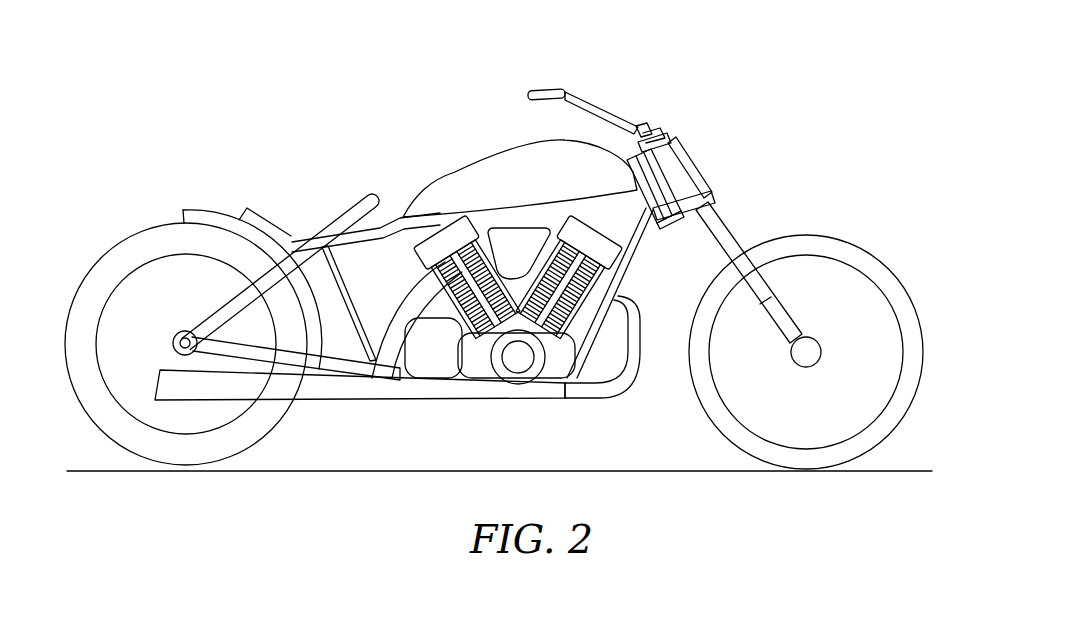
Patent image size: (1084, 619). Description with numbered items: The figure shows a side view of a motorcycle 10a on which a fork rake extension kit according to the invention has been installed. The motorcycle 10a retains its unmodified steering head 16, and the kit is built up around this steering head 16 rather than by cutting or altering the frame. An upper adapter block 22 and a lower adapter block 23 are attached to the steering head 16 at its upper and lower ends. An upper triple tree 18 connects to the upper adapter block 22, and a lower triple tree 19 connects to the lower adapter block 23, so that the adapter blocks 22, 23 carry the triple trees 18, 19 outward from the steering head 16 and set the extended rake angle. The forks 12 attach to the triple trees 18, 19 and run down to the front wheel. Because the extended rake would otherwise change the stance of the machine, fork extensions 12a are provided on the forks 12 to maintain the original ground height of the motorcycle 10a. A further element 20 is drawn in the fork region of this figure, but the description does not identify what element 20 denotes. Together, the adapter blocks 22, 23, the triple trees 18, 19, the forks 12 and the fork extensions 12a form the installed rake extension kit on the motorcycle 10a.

The motorcycle 10a is at (498, 255).
The upper adapter block 22 is at (623, 147).
The upper triple tree 18 is at (653, 147).
The steering head 16 is at (667, 170).
The fork stanchion 20 is at (677, 185).
The lower triple tree 19 is at (713, 203).
The lower adapter block 23 is at (673, 217).
The forks 12 is at (806, 328).
The fork extensions 12a is at (783, 312).